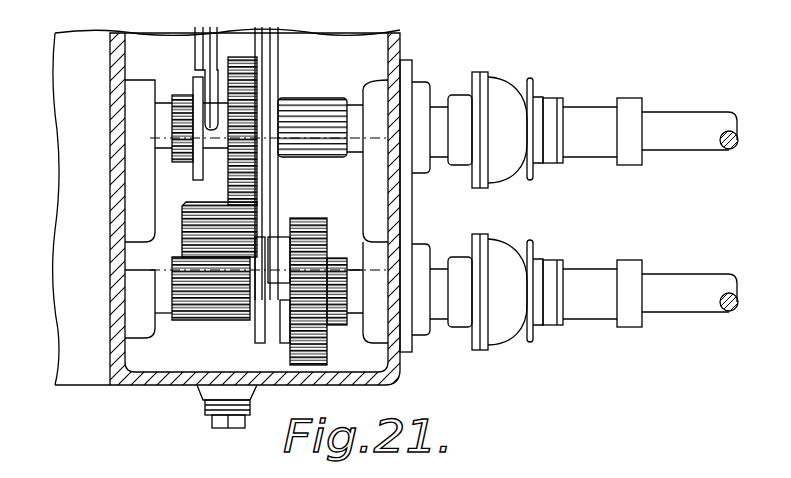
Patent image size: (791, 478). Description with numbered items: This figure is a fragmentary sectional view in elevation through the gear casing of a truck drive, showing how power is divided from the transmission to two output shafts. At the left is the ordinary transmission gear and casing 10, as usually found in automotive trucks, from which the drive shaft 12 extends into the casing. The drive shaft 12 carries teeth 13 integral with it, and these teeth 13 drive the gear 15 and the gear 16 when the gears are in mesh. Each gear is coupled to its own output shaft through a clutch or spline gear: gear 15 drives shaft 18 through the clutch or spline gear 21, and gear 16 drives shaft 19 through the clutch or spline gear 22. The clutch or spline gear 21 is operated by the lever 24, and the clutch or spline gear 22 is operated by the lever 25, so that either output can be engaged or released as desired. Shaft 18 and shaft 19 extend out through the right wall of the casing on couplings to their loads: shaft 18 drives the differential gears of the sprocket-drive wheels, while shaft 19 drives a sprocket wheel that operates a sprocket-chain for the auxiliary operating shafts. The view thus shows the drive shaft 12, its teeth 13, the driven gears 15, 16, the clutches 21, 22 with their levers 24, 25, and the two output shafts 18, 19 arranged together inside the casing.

The transmission gear and casing 10 is at (70, 91).
The drive shaft 12 is at (338, 183).
The teeth 13 is at (183, 217).
The gear 15 is at (318, 245).
The gear 16 is at (242, 82).
The shaft 18 is at (677, 278).
The shaft 19 is at (685, 118).
The clutch or spline gear 21 is at (265, 290).
The clutch or spline gear 22 is at (173, 138).
The lever 24 is at (275, 52).
The lever 25 is at (197, 47).